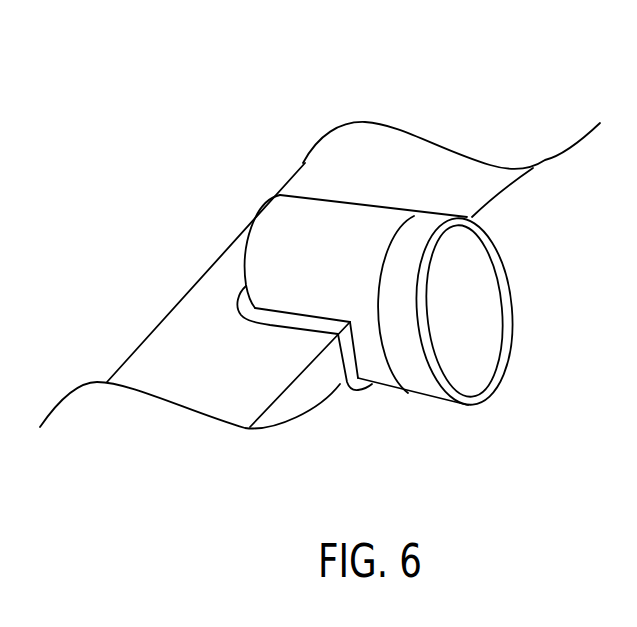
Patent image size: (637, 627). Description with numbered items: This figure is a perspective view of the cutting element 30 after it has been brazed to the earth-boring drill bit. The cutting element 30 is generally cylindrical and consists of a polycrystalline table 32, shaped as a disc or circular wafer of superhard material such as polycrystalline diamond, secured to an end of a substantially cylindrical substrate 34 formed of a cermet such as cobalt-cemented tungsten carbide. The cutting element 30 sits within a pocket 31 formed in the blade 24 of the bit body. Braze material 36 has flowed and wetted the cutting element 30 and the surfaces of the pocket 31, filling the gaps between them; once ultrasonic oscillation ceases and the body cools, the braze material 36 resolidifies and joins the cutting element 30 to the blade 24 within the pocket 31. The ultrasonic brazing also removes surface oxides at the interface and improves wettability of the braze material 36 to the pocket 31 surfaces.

The blade 24 is at (198, 303).
The cutting element 30 is at (492, 66).
The pocket 31 is at (287, 374).
The polycrystalline table 32 is at (427, 225).
The substrate 34 is at (378, 222).
The braze material 36 is at (352, 383).